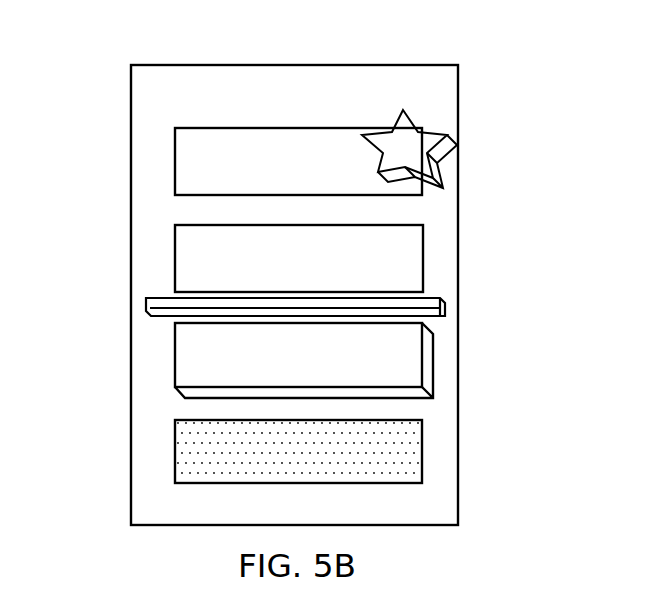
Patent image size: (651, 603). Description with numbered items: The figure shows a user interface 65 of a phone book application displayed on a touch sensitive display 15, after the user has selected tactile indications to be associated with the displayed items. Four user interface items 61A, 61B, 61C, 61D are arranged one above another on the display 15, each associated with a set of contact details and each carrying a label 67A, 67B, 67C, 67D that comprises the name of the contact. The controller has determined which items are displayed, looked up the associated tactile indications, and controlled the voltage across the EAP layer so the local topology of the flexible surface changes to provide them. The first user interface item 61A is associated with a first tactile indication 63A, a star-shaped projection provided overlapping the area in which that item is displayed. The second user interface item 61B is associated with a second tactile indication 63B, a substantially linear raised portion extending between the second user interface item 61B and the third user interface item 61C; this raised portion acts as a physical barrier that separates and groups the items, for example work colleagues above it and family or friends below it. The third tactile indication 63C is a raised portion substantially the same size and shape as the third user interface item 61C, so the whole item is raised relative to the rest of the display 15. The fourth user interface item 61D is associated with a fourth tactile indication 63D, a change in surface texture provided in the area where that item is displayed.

The display 15 is at (341, 262).
The user interface 65 is at (460, 115).
The first user interface item 61A is at (303, 158).
The second user interface item 61B is at (231, 250).
The third user interface item 61C is at (296, 351).
The fourth user interface item 61D is at (296, 443).
The label 67A is at (252, 167).
The label 67B is at (252, 262).
The label 67C is at (262, 358).
The label 67D is at (252, 452).
The first tactile indication 63A is at (432, 168).
The second tactile indication 63B is at (447, 307).
The third tactile indication 63C is at (433, 362).
The fourth tactile indication 63D is at (422, 441).